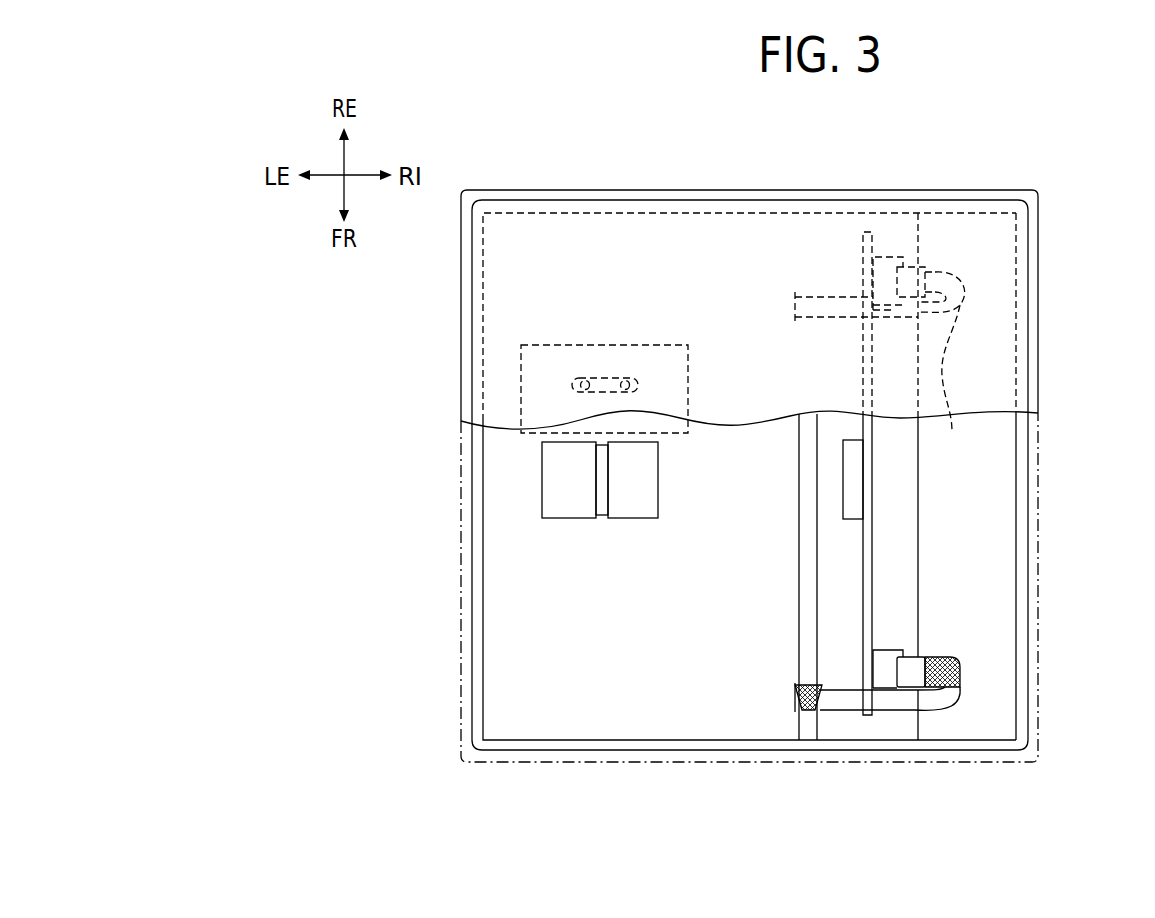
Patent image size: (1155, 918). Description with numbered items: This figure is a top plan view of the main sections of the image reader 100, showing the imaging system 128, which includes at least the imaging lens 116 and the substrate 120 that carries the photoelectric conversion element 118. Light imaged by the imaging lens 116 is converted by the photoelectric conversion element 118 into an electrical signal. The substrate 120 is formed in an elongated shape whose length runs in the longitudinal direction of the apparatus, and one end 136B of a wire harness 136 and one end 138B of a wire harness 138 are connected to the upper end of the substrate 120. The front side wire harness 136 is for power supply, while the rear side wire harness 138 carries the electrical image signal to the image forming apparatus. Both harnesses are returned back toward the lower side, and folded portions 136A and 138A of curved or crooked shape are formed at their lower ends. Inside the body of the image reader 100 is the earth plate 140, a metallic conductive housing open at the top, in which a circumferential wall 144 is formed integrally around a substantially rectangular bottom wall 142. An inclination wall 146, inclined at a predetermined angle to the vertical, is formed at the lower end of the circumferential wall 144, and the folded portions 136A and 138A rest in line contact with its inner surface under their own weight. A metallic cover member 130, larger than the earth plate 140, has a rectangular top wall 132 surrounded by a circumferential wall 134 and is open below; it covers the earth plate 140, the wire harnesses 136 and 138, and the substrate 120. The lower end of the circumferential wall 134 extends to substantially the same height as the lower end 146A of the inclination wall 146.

The image reader 100 is at (1075, 160).
The imaging lens 116 is at (623, 512).
The photoelectric conversion element 118 is at (850, 487).
The substrate 120 is at (864, 561).
The imaging system 128 is at (812, 160).
The cover member 130 is at (887, 199).
The top wall 132 is at (695, 233).
The circumferential wall 134 is at (1038, 309).
The wire harness 136 is at (968, 672).
The folded portion 136A is at (963, 707).
The one end 136B is at (910, 665).
The wire harness 138 is at (962, 282).
The folded portion 138A is at (955, 384).
The one end 138B is at (903, 328).
The earth plate 140 is at (698, 750).
The bottom wall 142 is at (595, 728).
The circumferential wall 144 is at (1022, 627).
The inclination wall 146 is at (1006, 532).
The lower end 146A is at (917, 723).